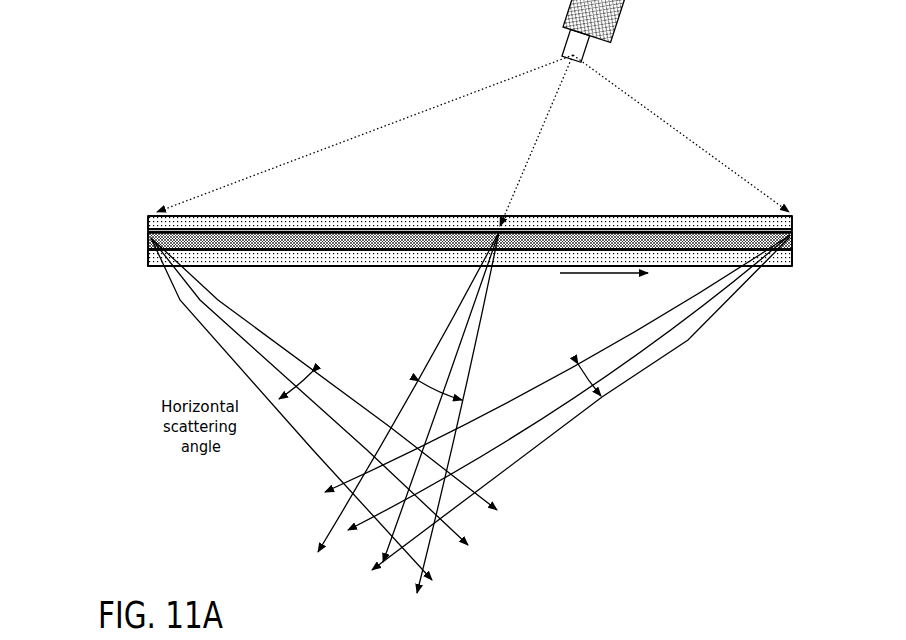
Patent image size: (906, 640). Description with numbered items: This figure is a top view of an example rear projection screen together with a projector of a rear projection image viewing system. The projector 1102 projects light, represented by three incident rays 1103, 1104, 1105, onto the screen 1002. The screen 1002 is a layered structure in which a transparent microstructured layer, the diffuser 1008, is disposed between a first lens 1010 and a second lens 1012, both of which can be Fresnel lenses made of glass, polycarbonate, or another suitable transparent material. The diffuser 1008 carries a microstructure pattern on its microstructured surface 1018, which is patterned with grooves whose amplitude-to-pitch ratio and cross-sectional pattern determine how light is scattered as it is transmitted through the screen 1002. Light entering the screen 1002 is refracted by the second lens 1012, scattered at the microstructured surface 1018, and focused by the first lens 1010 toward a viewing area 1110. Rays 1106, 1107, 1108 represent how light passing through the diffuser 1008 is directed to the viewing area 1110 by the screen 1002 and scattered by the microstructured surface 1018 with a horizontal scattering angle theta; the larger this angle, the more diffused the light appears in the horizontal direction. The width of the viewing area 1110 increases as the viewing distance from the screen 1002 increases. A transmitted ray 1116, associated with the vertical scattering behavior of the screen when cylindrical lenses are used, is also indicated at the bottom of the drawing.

The rear projection screen 1002 is at (412, 241).
The transparent microstructured layer 1008 is at (383, 265).
The first lens 1010 is at (435, 265).
The second lens 1012 is at (347, 218).
The microstructured surface 1018 is at (383, 265).
The projector 1102 is at (623, 10).
The incident ray 1103 is at (448, 102).
The incident ray 1104 is at (551, 113).
The incident ray 1105 is at (668, 120).
The ray 1106 is at (197, 332).
The ray 1107 is at (497, 337).
The ray 1108 is at (640, 387).
The viewing area 1110 is at (403, 496).
The transmitted ray 1116 is at (626, 634).